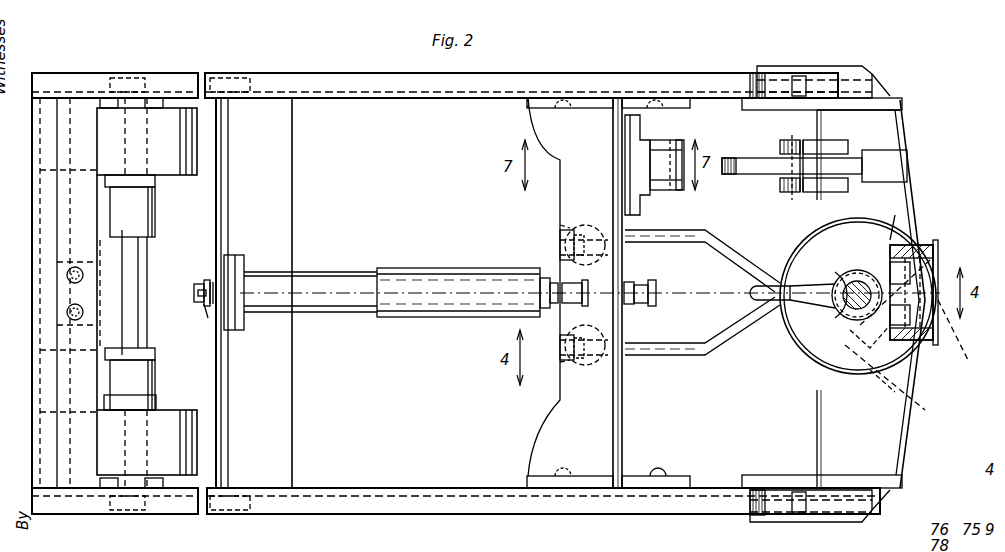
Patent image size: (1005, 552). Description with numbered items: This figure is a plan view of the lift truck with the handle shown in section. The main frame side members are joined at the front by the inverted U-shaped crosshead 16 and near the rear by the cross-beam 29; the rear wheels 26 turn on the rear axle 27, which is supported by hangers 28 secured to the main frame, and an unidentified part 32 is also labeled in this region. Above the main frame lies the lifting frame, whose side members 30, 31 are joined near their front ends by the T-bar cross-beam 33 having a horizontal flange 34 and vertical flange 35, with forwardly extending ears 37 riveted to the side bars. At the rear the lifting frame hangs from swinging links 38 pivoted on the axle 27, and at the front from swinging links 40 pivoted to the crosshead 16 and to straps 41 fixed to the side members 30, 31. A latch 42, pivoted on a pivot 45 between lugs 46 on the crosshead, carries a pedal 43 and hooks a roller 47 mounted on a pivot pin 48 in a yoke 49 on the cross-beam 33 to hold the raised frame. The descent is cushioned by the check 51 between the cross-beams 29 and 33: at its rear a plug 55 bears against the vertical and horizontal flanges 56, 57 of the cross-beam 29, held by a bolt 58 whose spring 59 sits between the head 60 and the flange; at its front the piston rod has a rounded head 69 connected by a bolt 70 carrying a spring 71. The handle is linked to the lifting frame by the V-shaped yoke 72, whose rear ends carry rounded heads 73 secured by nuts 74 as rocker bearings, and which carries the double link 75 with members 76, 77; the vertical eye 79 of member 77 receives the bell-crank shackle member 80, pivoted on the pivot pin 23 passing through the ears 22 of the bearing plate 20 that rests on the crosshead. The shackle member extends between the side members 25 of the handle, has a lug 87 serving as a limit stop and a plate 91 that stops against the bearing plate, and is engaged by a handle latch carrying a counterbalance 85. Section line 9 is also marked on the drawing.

The section line 9 is at (40, 385).
The crosshead 16 is at (812, 396).
The bearing plate 20 is at (810, 345).
The ears 22 is at (940, 275).
The pivot pin 23 is at (953, 343).
The side members of the handle 25 is at (935, 252).
The rear wheels 26 is at (176, 176).
The rear axle 27 is at (140, 330).
The hangers 28 is at (220, 75).
The cross-beam 29 is at (295, 245).
The side member of the lifting frame 30 is at (330, 92).
The side member of the lifting frame 31 is at (337, 496).
The roller shaft 32 is at (100, 287).
The cross-beam 33 is at (623, 416).
The horizontal flange 34 is at (560, 435).
The vertical flange 35 is at (623, 440).
The ears 37 is at (688, 108).
The swinging links 38 is at (150, 228).
The swinging links 40 is at (818, 70).
The straps 41 is at (758, 80).
The latch 42 is at (745, 150).
The pedal 43 is at (908, 182).
The pivot 45 is at (802, 150).
The lugs 46 is at (790, 148).
The roller 47 is at (685, 175).
The pivot pin 48 is at (670, 190).
The yoke 49 is at (640, 147).
The check 51 is at (377, 312).
The plug 55 is at (240, 293).
The vertical flange 56 is at (228, 415).
The horizontal flange 57 is at (292, 390).
The bolt 58 is at (200, 294).
The spring 59 is at (205, 306).
The head 60 is at (194, 290).
The rounded head 69 is at (560, 280).
The bolt 70 is at (665, 300).
The spring 71 is at (640, 285).
The yoke 72 is at (710, 245).
The rounded heads 73 is at (570, 228).
The nuts 74 is at (560, 232).
The double link 75 is at (808, 312).
The member 76 is at (762, 295).
The member 77 is at (840, 280).
The vertically disposed eye 79 is at (836, 282).
The shackle member 80 is at (858, 283).
The counterbalance 85 is at (960, 262).
The lug 87 is at (988, 431).
The plate 91 is at (890, 245).